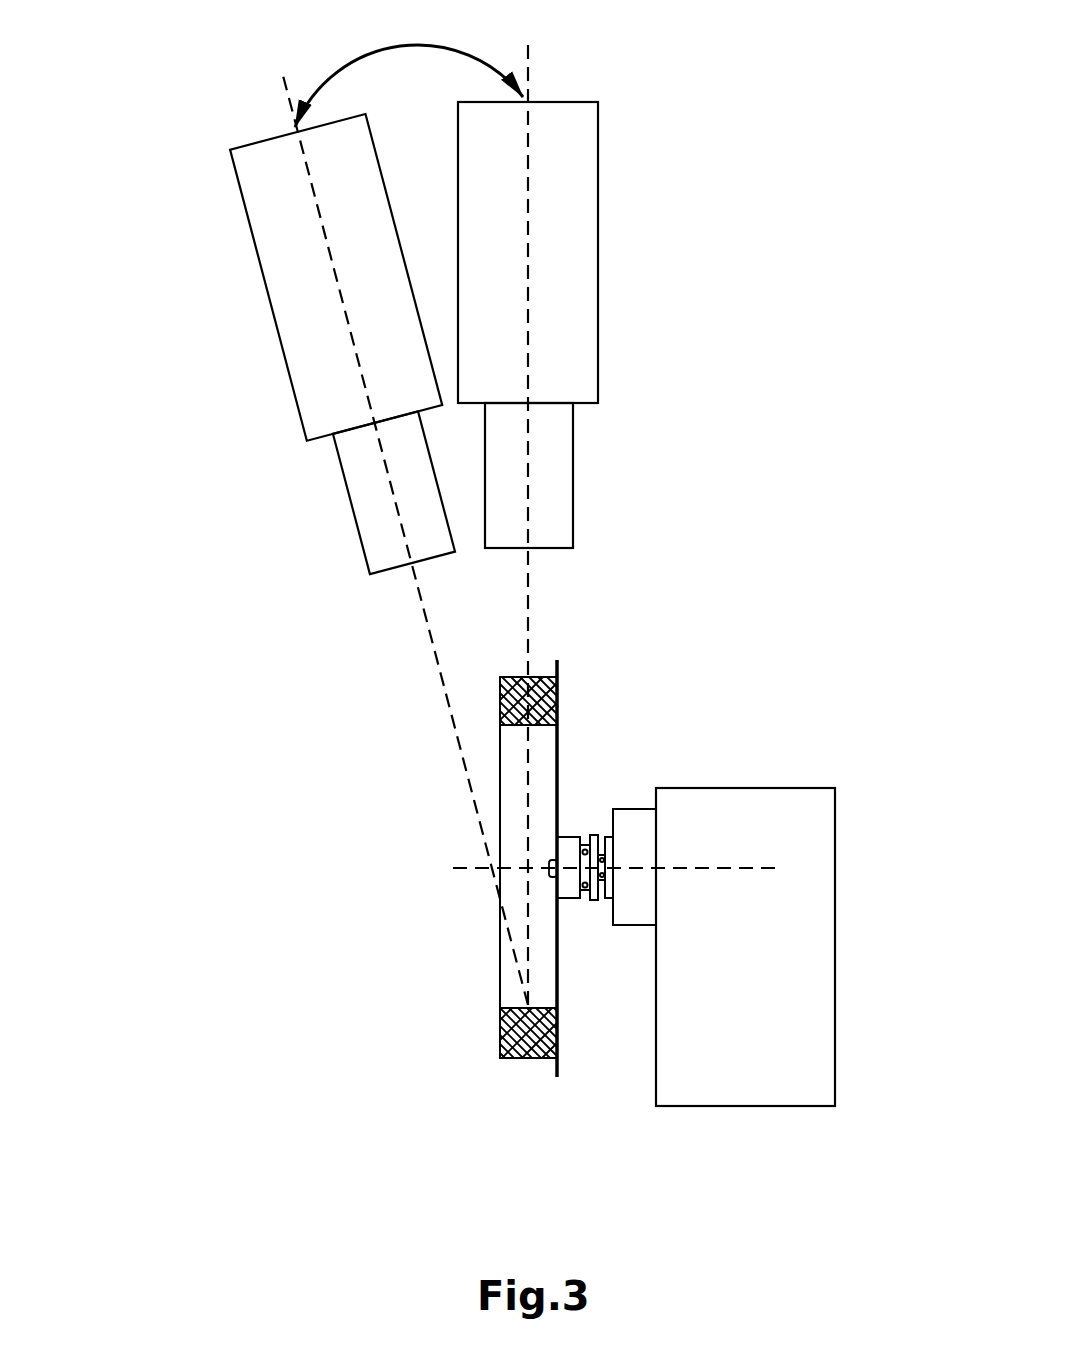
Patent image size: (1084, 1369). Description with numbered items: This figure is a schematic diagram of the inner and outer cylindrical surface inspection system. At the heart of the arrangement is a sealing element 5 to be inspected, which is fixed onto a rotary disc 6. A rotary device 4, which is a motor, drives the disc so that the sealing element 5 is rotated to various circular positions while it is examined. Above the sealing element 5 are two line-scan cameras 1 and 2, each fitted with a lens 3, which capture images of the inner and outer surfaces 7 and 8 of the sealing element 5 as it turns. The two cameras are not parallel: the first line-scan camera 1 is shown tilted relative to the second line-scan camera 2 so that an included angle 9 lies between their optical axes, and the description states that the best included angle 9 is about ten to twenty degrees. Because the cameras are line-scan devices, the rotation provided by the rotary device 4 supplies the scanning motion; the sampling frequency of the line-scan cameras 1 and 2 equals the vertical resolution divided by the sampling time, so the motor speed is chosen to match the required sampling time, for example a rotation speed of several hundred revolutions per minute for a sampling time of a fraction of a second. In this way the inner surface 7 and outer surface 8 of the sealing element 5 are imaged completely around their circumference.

The line-scan camera 1 is at (305, 333).
The line-scan camera 2 is at (560, 262).
The lens 3 is at (418, 489).
The rotary device 4 is at (786, 811).
The sealing element 5 is at (497, 702).
The rotary disc 6 is at (555, 752).
The inner surface 7 is at (525, 1005).
The outer surface 8 is at (530, 672).
The included angle 9 is at (409, 63).